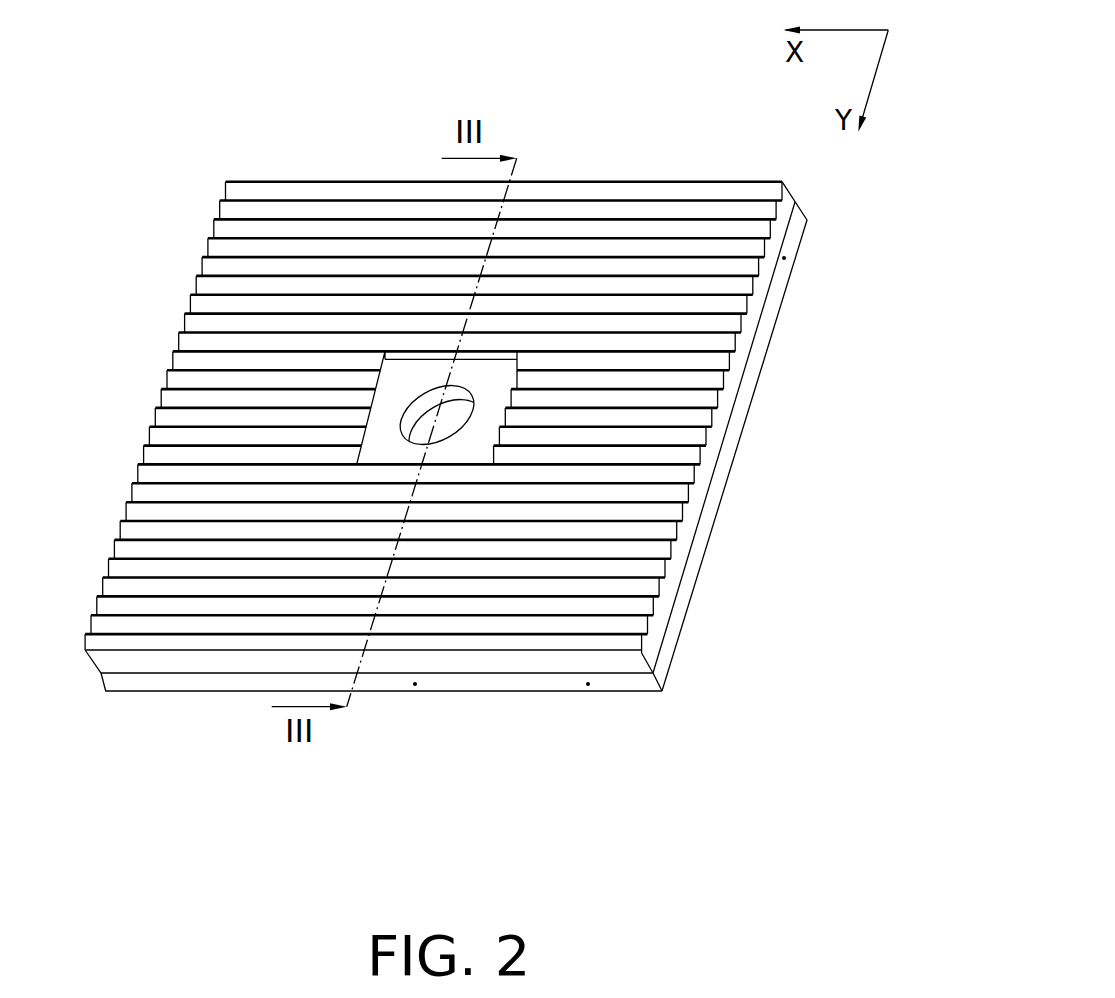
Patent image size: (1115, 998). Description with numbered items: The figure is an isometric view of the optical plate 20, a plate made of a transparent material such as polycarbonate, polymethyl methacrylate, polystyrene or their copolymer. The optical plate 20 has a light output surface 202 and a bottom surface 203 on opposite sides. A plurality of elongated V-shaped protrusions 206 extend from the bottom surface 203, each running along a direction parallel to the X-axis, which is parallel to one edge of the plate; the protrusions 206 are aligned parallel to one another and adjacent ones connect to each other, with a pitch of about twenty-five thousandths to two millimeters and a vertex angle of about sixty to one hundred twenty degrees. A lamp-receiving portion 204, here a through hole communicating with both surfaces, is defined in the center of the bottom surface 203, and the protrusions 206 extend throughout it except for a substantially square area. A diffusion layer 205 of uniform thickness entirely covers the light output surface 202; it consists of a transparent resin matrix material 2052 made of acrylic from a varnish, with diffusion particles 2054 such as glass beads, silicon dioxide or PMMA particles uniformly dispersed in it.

The optical plate 20 is at (146, 148).
The light output surface 202 is at (787, 278).
The bottom surface 203 is at (493, 377).
The lamp-receiving portion 204 is at (440, 425).
The diffusion layer 205 is at (563, 766).
The transparent resin matrix material 2052 is at (552, 683).
The diffusion particles 2054 is at (443, 683).
The elongated V-shaped protrusions 206 is at (655, 529).